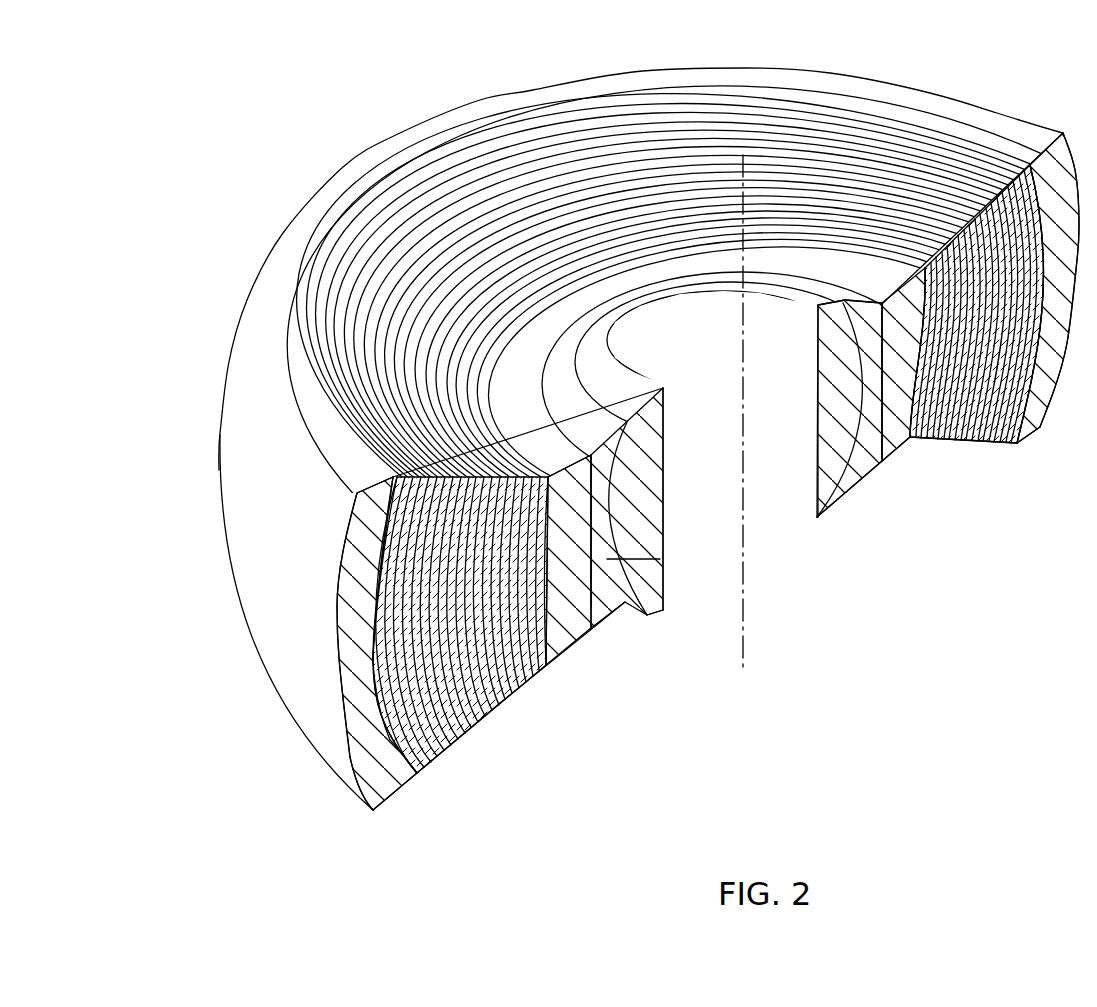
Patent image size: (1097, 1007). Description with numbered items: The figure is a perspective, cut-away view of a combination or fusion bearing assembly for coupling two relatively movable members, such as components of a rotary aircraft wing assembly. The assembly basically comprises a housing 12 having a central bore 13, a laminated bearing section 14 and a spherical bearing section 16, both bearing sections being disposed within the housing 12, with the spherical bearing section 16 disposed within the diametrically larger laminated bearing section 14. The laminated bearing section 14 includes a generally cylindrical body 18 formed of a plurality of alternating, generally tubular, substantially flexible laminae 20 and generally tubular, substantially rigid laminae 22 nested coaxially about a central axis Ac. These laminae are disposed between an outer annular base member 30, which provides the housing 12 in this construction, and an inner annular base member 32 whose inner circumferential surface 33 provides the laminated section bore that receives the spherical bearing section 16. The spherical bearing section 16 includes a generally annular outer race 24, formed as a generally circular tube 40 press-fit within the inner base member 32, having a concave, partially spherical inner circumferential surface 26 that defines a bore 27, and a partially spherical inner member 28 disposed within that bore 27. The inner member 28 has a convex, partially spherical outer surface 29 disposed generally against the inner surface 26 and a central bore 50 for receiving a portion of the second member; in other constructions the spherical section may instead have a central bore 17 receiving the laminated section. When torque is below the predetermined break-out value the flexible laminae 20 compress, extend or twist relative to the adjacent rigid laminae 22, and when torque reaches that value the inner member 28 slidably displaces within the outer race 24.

The housing 12 is at (238, 720).
The central bore 13 is at (1036, 404).
The laminated bearing section 14 is at (494, 150).
The spherical bearing section 16 is at (852, 540).
The central bore 17 is at (670, 579).
The cylindrical body 18 is at (512, 694).
The flexible laminae 20 is at (456, 794).
The rigid laminae 22 is at (471, 760).
The outer race 24 is at (874, 476).
The inner circumferential surface 26 is at (660, 558).
The bore 27 is at (616, 526).
The inner member 28 is at (656, 622).
The outer surface 29 is at (870, 352).
The outer annular base member 30 is at (324, 754).
The inner annular base member 32 is at (566, 630).
The inner circumferential surface 33 is at (595, 600).
The circular tube 40 is at (873, 440).
The bore 50 is at (775, 472).
The central axis Ac is at (745, 664).